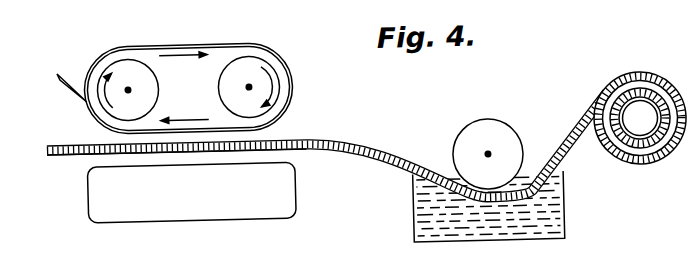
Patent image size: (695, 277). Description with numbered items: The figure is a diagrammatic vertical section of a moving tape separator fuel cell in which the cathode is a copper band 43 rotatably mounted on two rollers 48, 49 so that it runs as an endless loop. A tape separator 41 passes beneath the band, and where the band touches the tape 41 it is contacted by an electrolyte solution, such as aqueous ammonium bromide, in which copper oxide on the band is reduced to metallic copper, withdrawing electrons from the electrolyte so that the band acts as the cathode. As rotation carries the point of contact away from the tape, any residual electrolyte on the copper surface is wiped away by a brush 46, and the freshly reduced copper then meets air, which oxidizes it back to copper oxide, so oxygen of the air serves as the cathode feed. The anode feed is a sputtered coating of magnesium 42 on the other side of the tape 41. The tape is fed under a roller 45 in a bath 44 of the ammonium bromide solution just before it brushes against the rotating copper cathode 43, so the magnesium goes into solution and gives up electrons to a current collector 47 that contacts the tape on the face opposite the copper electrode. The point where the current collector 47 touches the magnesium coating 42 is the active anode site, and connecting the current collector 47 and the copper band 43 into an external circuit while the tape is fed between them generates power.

The tape separator 41 is at (61, 144).
The sputtered coating of magnesium 42 is at (63, 154).
The copper band 43 is at (153, 46).
The bath 44 is at (554, 220).
The roller 45 is at (491, 156).
The brush 46 is at (57, 72).
The current collector 47 is at (157, 222).
The roller 48 is at (134, 65).
The roller 49 is at (264, 71).